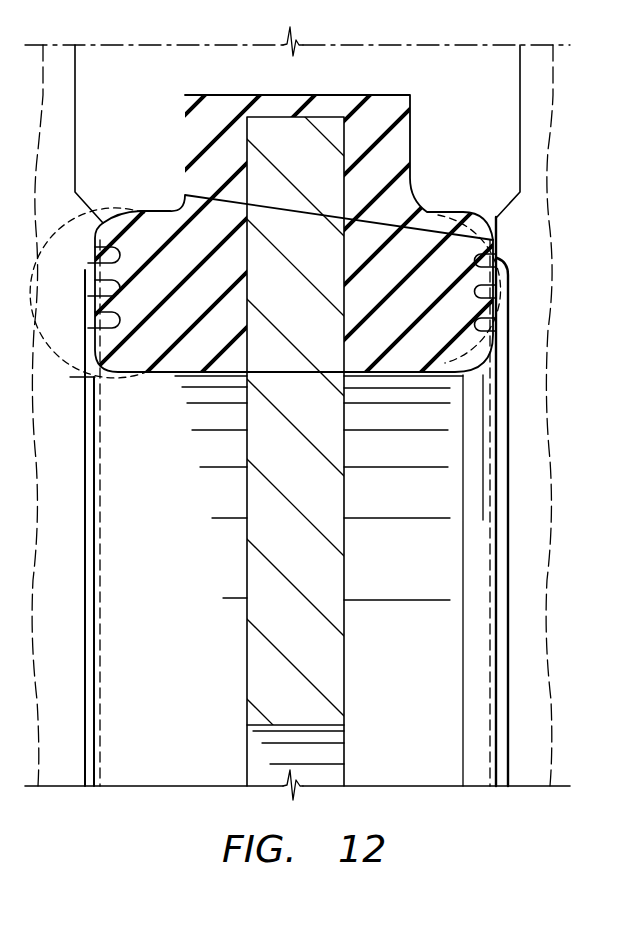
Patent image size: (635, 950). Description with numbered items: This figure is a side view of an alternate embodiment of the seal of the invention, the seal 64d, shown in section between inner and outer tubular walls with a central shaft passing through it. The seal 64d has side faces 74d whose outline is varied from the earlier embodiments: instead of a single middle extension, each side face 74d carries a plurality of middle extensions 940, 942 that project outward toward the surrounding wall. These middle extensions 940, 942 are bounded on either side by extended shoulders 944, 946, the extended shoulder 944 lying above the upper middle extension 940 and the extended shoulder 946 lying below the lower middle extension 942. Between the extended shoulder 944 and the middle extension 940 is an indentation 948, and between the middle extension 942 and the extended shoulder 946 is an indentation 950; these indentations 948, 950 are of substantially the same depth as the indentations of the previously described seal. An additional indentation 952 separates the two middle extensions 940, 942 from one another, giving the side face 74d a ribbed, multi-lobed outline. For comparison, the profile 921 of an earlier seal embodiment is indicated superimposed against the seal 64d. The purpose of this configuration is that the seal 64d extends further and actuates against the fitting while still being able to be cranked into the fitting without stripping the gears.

The side faces 74d is at (497, 212).
The seal 64d is at (463, 374).
The profile 921 is at (512, 378).
The extended shoulder 944 is at (500, 242).
The indentation 948 is at (500, 258).
The middle extension 940 is at (508, 277).
The additional indentation 952 is at (510, 290).
The middle extension 942 is at (510, 309).
The indentation 950 is at (507, 332).
The extended shoulder 946 is at (500, 350).